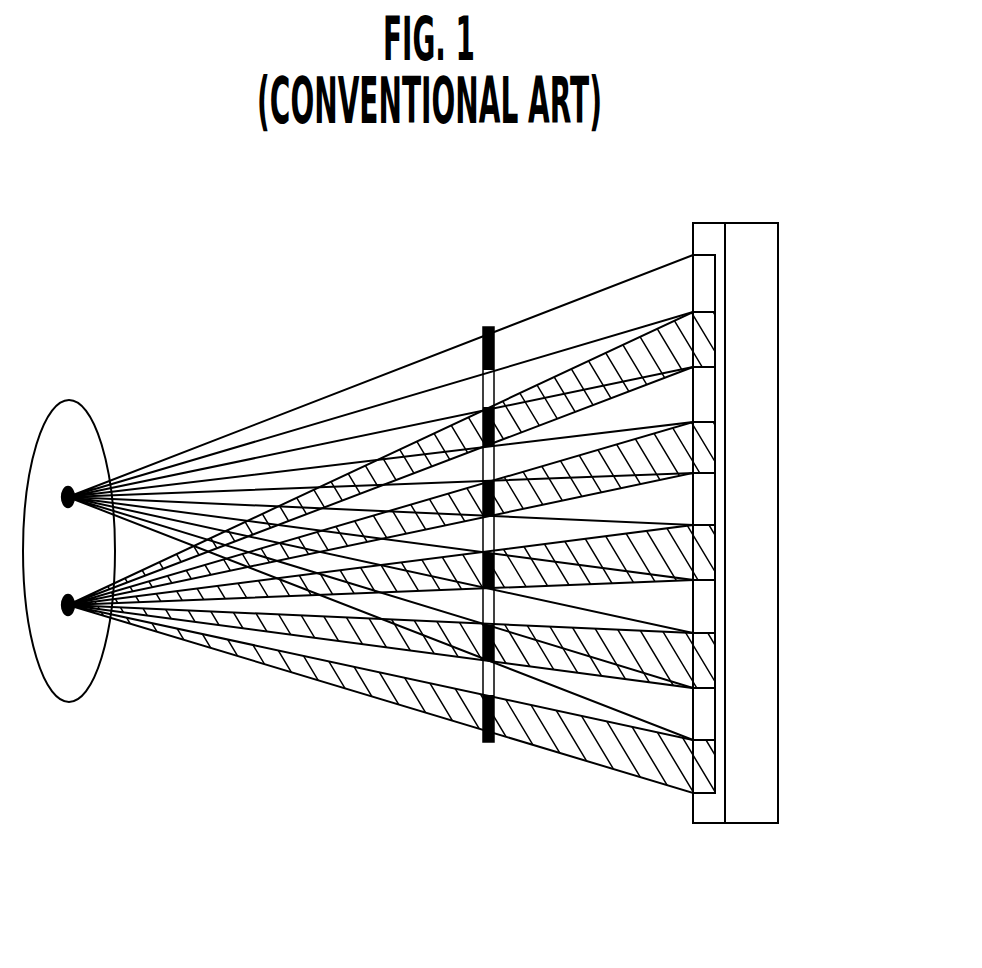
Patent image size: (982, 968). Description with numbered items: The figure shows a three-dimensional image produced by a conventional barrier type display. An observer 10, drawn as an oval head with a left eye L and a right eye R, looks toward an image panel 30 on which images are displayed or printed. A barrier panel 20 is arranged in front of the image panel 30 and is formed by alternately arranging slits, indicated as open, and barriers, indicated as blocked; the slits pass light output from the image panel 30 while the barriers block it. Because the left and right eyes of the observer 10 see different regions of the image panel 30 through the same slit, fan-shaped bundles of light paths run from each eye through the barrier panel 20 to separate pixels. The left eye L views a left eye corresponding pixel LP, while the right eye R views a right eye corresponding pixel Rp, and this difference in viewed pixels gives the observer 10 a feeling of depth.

The observer 10 is at (87, 408).
The barrier panel 20 is at (490, 327).
The image panel 30 is at (747, 223).
The left eye corresponding pixel LP is at (705, 397).
The right eye corresponding pixel Rp is at (708, 338).